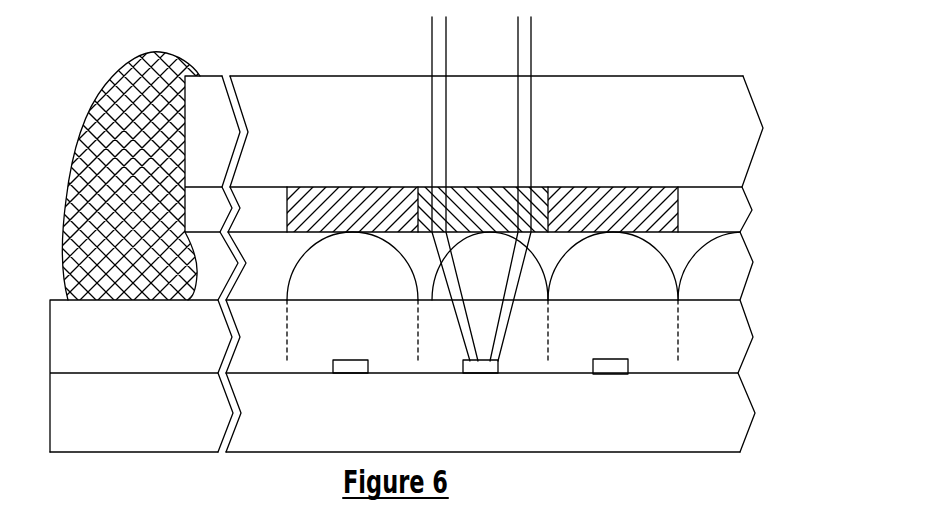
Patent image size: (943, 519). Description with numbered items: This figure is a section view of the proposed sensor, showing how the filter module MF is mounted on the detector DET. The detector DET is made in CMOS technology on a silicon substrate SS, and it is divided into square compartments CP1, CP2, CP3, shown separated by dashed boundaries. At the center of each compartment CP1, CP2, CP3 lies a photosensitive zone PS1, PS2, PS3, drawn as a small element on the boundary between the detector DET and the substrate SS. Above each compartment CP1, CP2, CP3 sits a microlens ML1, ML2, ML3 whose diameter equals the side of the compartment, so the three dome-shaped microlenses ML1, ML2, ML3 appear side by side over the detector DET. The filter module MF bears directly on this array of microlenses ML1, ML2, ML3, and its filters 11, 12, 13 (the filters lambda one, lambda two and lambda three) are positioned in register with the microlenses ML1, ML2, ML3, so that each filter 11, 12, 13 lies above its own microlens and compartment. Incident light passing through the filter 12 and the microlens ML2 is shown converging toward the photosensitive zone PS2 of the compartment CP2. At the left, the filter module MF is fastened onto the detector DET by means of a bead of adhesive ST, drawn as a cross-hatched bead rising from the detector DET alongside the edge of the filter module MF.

The bead of adhesive ST is at (125, 60).
The filter module MF is at (643, 95).
The filter λ1 11 is at (353, 187).
The filter λ2 12 is at (482, 187).
The filter λ3 13 is at (602, 187).
The microlens ML1 is at (370, 280).
The microlens ML2 is at (503, 270).
The microlens ML3 is at (637, 275).
The compartment CP1 is at (303, 360).
The compartment CP2 is at (432, 360).
The compartment CP3 is at (568, 360).
The photosensitive zone PS1 is at (352, 366).
The photosensitive zone PS2 is at (480, 370).
The photosensitive zone PS3 is at (612, 368).
The detector DET is at (733, 335).
The silicon substrate SS is at (738, 415).